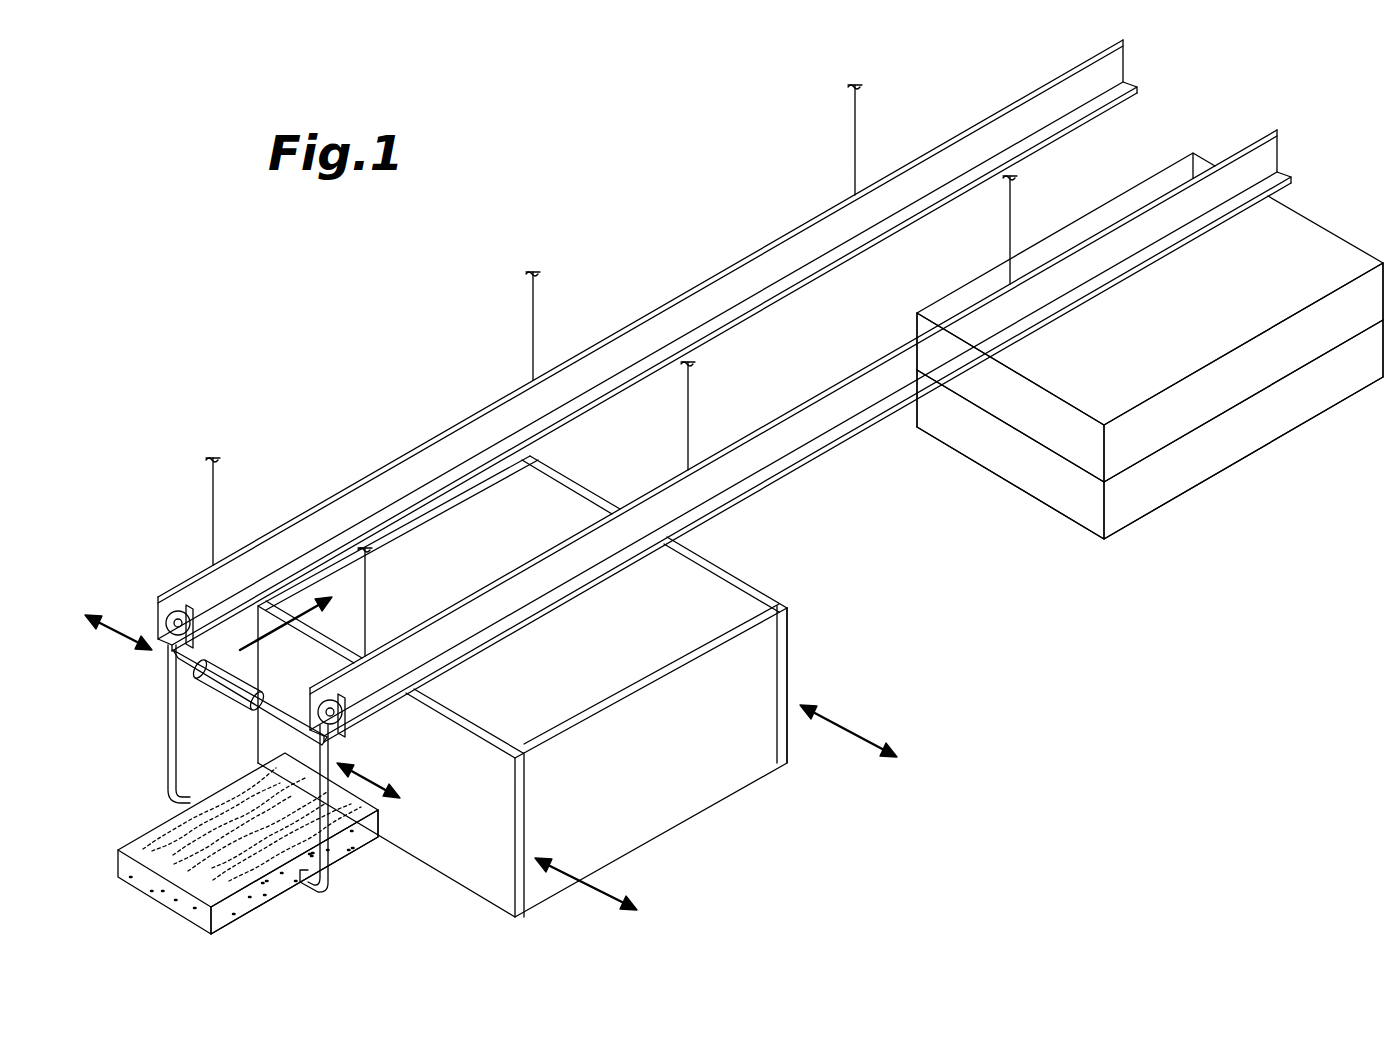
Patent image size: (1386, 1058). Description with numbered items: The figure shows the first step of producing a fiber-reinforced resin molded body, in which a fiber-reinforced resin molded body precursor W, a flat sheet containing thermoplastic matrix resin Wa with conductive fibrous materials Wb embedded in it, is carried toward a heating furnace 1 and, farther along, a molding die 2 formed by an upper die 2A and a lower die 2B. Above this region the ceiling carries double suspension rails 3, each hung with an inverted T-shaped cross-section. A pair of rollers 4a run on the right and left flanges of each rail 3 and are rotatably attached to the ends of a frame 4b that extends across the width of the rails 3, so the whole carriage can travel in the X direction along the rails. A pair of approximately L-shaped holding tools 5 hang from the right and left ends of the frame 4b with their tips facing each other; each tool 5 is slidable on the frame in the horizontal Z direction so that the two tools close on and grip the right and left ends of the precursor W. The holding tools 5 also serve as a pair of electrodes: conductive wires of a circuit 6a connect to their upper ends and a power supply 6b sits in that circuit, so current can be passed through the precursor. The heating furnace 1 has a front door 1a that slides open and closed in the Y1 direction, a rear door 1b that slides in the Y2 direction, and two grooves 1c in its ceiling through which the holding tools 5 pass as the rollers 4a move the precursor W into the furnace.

The heating furnace 1 is at (680, 775).
The front door 1a is at (420, 848).
The rear door 1b is at (790, 640).
The grooves 1c is at (540, 500).
The molding die 2 is at (1302, 578).
The upper die 2A is at (1158, 421).
The lower die 2B is at (1217, 442).
The suspension rails 3 is at (357, 505).
The rollers 4a is at (178, 610).
The frame 4b is at (192, 612).
The holding tools 5 is at (168, 750).
The circuit 6a is at (173, 668).
The power supply 6b is at (210, 702).
The fiber-reinforced resin molded body precursor W is at (107, 830).
The matrix resin Wa is at (172, 820).
The conductive fibrous materials Wb is at (257, 896).
The X direction X is at (286, 628).
The Y1 direction Y1 is at (586, 890).
The Y2 direction Y2 is at (848, 731).
The Z direction Z is at (242, 706).